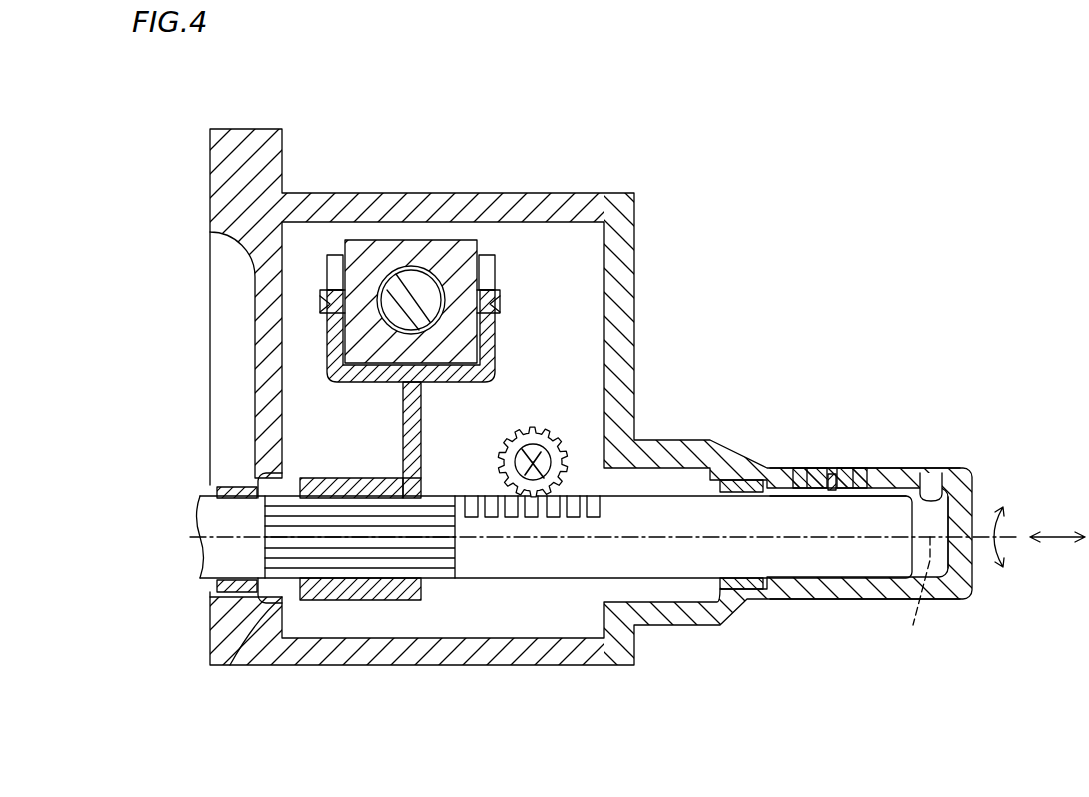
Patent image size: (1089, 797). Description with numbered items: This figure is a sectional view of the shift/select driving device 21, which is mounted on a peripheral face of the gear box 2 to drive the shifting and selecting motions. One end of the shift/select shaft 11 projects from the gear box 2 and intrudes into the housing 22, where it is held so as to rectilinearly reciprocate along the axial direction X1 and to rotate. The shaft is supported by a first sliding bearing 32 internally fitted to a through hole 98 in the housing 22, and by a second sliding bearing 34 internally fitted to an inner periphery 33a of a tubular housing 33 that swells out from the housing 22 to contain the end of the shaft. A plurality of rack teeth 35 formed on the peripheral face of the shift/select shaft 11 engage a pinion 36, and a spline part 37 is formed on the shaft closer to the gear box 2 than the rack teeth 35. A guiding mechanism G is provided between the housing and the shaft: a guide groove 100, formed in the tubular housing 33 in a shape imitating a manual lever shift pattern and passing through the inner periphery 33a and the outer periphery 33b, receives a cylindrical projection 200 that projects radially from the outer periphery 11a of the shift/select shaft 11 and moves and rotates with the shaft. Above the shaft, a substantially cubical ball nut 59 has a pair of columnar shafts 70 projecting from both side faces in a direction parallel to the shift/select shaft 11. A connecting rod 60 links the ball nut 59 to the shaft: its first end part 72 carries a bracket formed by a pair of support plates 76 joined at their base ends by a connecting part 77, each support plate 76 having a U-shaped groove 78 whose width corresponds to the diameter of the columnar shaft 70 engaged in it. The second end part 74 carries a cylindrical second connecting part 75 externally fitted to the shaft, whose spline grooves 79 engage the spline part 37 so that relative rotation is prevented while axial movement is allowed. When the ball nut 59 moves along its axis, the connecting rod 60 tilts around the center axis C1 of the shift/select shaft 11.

The gear box 2 is at (205, 462).
The shift/select driving device 21 is at (680, 142).
The housing 22 is at (533, 192).
The first sliding bearing 32 is at (213, 663).
The shift/select shaft 11 is at (207, 575).
The outer periphery 11a is at (825, 592).
The spline part 37 is at (427, 568).
The spline grooves 79 is at (347, 568).
The through hole 98 is at (237, 506).
The rack teeth 35 is at (572, 548).
The pinion 36 is at (535, 430).
The connecting rod 60 is at (359, 420).
The first end part 72 is at (425, 400).
The second end part 74 is at (415, 487).
The second connecting part 75 is at (337, 483).
The connecting part 77 is at (375, 383).
The ball nut 59 is at (465, 333).
The columnar shafts 70 is at (325, 308).
The support plates 76 is at (333, 279).
The U-shaped groove 78 is at (330, 300).
The tubular housing 33 is at (880, 599).
The inner periphery 33a is at (945, 490).
The outer periphery 33b is at (930, 497).
The second sliding bearing 34 is at (742, 582).
The guide groove 100 is at (845, 472).
The projection 200 is at (828, 472).
The guiding mechanism G is at (893, 410).
The center axis C1 is at (915, 597).
The axial direction X1 is at (1058, 537).